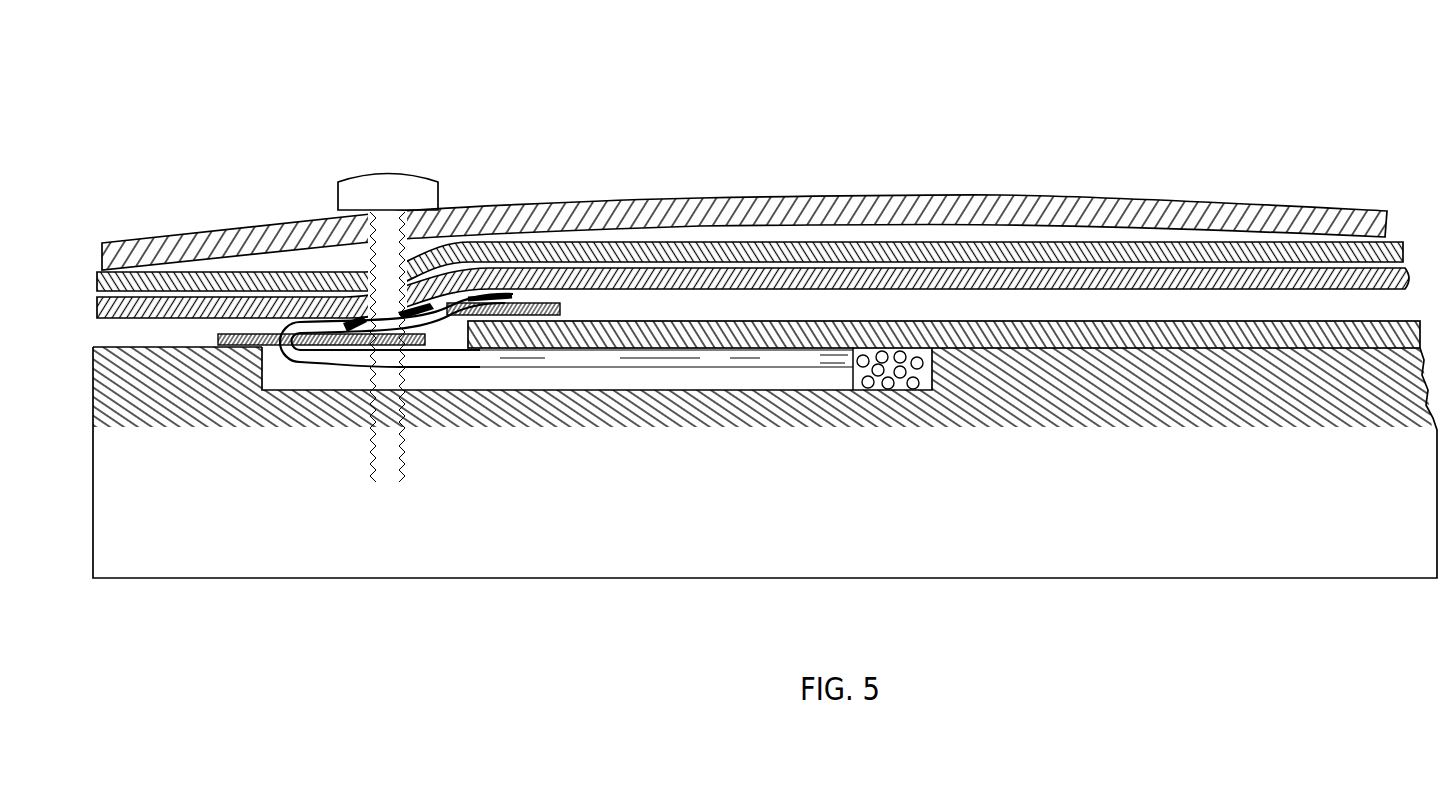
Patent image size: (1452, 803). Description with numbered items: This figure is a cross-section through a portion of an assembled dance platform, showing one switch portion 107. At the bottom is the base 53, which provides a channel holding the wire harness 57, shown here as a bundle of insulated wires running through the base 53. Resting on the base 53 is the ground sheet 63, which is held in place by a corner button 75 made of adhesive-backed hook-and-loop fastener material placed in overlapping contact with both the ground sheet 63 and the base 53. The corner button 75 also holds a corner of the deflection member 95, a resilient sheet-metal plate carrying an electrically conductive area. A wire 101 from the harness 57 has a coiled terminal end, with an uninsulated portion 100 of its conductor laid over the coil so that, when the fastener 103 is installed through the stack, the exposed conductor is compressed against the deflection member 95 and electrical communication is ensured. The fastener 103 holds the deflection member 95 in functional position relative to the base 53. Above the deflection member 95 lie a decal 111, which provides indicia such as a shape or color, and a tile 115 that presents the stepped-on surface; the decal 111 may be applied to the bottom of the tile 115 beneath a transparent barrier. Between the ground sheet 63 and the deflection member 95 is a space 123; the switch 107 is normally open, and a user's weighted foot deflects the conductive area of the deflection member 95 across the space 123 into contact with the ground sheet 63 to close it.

The base 53 is at (258, 493).
The wire harness 57 is at (897, 377).
The ground sheet 63 is at (1083, 336).
The corner button 75 is at (460, 330).
The deflection member 95 is at (1000, 273).
The uninsulated portion 100 is at (350, 330).
The wire 101 is at (628, 365).
The fastener 103 is at (433, 190).
The switch portion 107 is at (1128, 138).
The decal 111 is at (548, 257).
The tile 115 is at (822, 208).
The space 123 is at (673, 312).